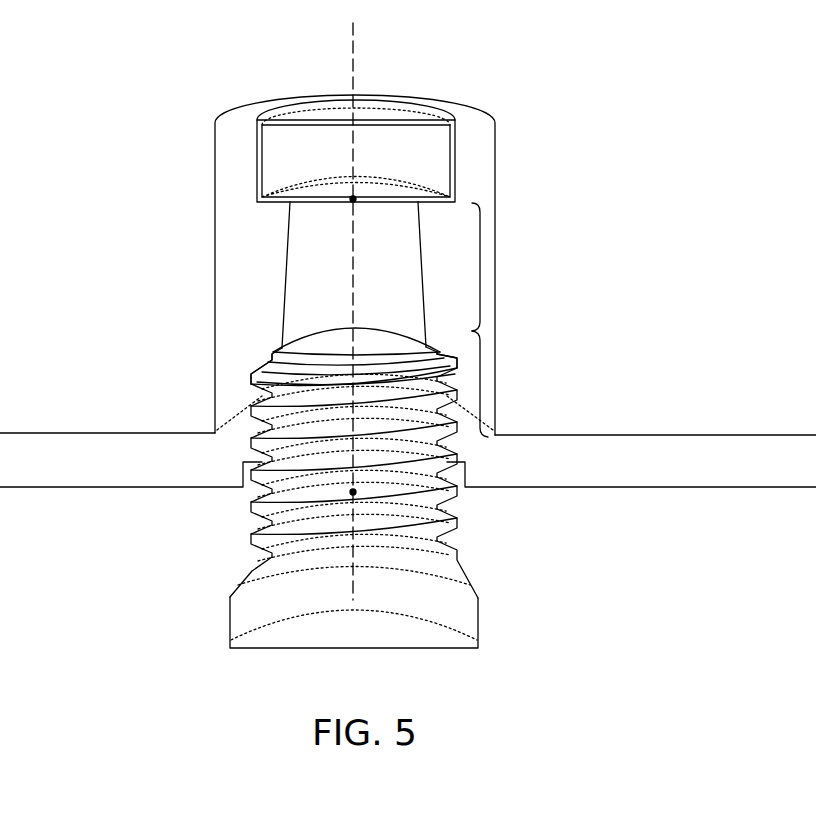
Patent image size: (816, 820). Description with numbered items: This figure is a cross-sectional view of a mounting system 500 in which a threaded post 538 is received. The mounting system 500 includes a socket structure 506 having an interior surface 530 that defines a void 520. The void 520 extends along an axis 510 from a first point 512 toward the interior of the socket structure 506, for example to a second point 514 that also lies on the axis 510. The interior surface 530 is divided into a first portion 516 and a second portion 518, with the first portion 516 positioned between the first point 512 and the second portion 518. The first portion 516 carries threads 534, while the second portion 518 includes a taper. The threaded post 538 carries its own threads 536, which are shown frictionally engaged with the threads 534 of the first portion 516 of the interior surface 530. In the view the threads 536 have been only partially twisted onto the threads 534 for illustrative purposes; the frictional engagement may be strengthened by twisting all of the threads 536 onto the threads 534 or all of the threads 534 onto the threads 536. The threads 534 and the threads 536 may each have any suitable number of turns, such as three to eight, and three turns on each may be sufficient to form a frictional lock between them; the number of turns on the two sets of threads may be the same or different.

The mounting system 500 is at (408, 354).
The socket structure 506 is at (215, 187).
The axis 510 is at (357, 50).
The first point 512 is at (353, 492).
The second point 514 is at (353, 199).
The first portion 516 is at (483, 410).
The second portion 518 is at (483, 268).
The void 520 is at (323, 258).
The interior surface 530 is at (415, 308).
The threads 534 is at (272, 350).
The threads 536 is at (262, 530).
The threaded post 538 is at (230, 623).